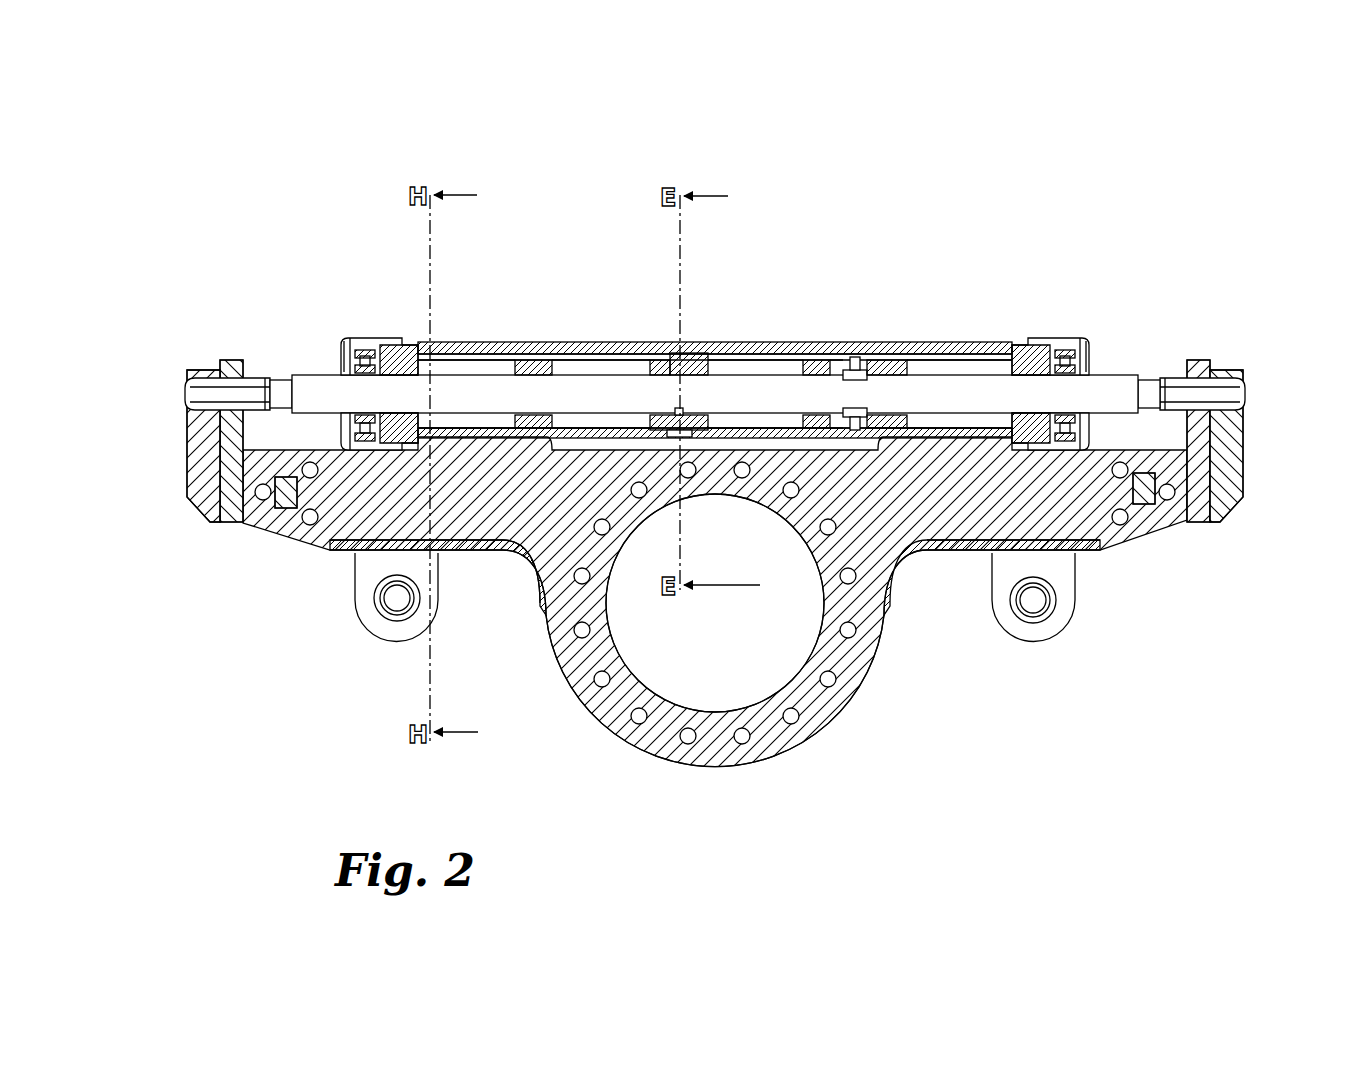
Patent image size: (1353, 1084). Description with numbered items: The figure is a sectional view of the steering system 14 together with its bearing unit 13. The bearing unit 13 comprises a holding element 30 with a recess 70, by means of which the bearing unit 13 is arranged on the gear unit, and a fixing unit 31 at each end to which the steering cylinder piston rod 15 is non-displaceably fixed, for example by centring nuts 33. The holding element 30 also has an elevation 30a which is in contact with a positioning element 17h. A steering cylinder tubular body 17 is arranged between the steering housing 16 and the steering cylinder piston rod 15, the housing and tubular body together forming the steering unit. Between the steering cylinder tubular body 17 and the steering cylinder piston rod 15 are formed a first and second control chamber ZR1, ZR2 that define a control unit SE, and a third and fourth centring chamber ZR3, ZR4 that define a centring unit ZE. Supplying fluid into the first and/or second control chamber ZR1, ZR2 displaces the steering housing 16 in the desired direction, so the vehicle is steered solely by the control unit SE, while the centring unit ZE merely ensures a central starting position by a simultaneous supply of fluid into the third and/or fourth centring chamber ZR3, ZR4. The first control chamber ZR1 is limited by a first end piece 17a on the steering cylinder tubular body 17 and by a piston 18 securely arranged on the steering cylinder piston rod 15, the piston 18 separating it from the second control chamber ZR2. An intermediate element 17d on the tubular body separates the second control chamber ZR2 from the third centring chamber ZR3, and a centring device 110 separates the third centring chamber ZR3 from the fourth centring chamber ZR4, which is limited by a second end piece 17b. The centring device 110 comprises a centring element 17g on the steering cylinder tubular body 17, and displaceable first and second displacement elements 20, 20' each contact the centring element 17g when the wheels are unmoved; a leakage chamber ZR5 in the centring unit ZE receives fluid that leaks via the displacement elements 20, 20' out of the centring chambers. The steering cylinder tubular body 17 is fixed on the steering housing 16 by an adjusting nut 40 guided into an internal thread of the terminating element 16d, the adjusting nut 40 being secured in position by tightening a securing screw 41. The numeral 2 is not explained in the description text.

The lower key 2 is at (855, 415).
The bearing unit 13 is at (583, 673).
The steering system 14 is at (398, 330).
The steering cylinder piston rod 15 is at (1103, 385).
The steering housing 16 is at (770, 343).
The terminating element 16d is at (349, 338).
The steering cylinder tubular body 17 is at (1000, 343).
The first end piece 17a is at (388, 432).
The second end piece 17b is at (1033, 420).
The intermediate element 17d is at (660, 358).
The centring element 17g is at (842, 423).
The positioning element 17h is at (692, 437).
The piston 18 is at (528, 343).
The first displacement element 20 is at (832, 326).
The second displacement element 20' is at (896, 322).
The holding element 30 is at (365, 517).
The elevation 30a is at (540, 453).
The fixing unit 31 is at (232, 500).
The centring nut 33 is at (205, 372).
The adjusting nut 40 is at (367, 342).
The securing screw 41 is at (323, 348).
The recess 70 is at (707, 675).
The centring device 110 is at (840, 348).
The control unit SE is at (565, 350).
The centring unit ZE is at (936, 418).
The first control chamber ZR1 is at (476, 343).
The second control chamber ZR2 is at (612, 343).
The third centring chamber ZR3 is at (750, 343).
The fourth centring chamber ZR4 is at (945, 343).
The leakage chamber ZR5 is at (860, 343).